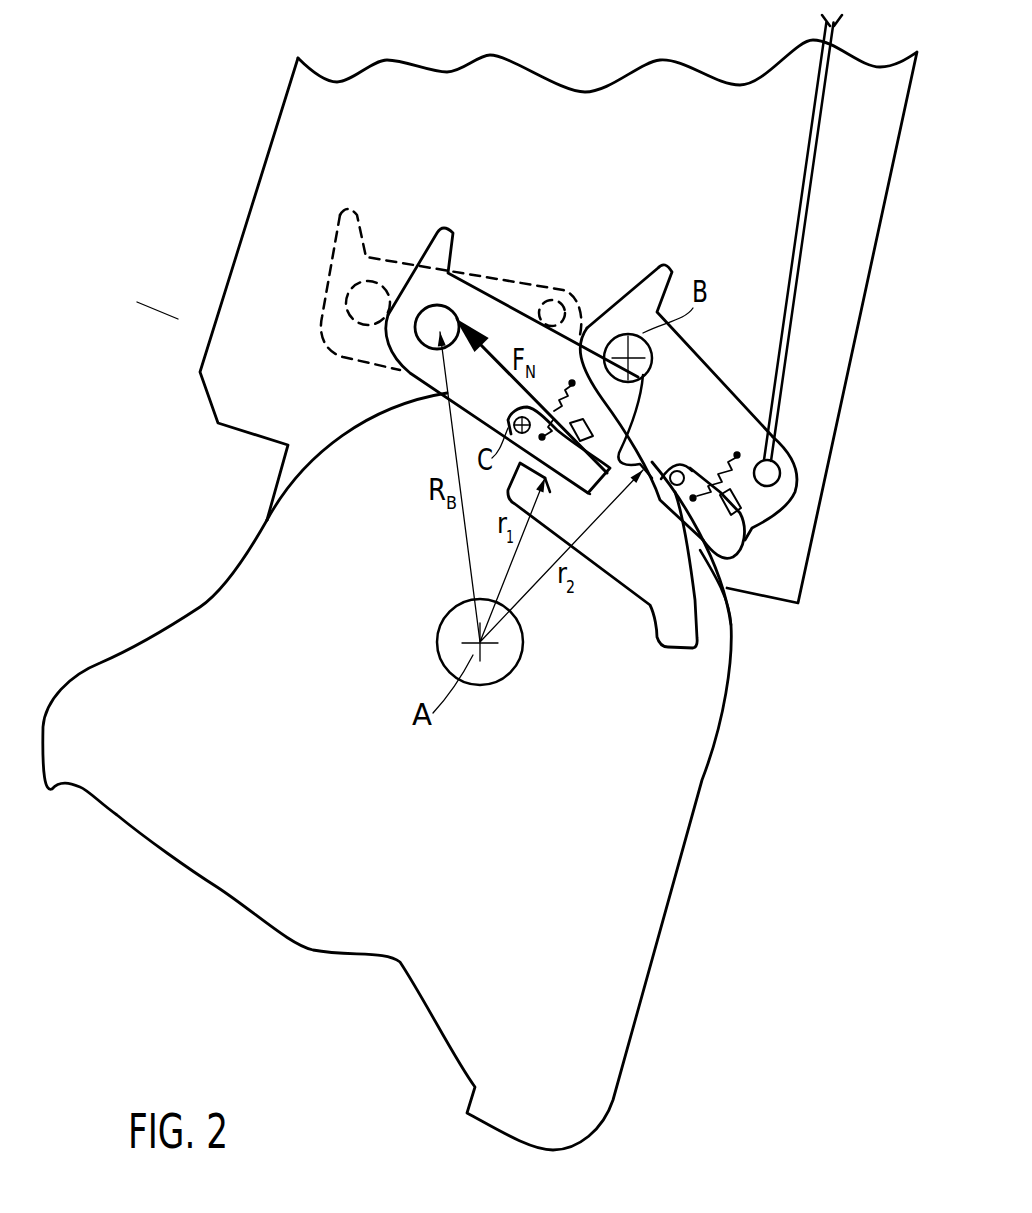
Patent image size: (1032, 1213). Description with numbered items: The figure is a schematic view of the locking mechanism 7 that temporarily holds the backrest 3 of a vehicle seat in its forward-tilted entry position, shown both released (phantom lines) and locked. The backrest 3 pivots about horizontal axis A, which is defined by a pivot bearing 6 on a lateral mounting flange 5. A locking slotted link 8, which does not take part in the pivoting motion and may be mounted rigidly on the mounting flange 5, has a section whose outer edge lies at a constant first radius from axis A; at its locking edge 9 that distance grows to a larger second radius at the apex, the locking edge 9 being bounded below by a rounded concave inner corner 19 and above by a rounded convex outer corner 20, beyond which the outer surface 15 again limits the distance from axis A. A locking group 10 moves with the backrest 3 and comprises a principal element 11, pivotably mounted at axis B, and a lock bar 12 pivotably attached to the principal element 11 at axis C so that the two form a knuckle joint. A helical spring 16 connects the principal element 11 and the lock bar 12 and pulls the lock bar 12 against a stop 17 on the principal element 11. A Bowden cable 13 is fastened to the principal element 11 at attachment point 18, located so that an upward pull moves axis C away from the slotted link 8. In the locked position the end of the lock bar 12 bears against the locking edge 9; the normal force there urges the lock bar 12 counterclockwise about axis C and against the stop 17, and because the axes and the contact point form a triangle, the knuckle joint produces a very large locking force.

The backrest 3 is at (270, 183).
The mounting flange 5 is at (107, 663).
The pivot bearing 6 is at (523, 650).
The locking mechanism 7 is at (147, 301).
The locking slotted link 8 is at (677, 645).
The locking edge 9 is at (632, 453).
The locking group 10 is at (498, 252).
The principal element 11 is at (697, 353).
The lock bar 12 is at (738, 543).
The Bowden cable 13 is at (810, 152).
The outer surface 15 is at (731, 630).
The helical spring 16 is at (733, 458).
The stop 17 is at (748, 508).
The attachment point 18 is at (780, 473).
The concave inner corner 19 is at (590, 494).
The convex outer corner 20 is at (627, 455).